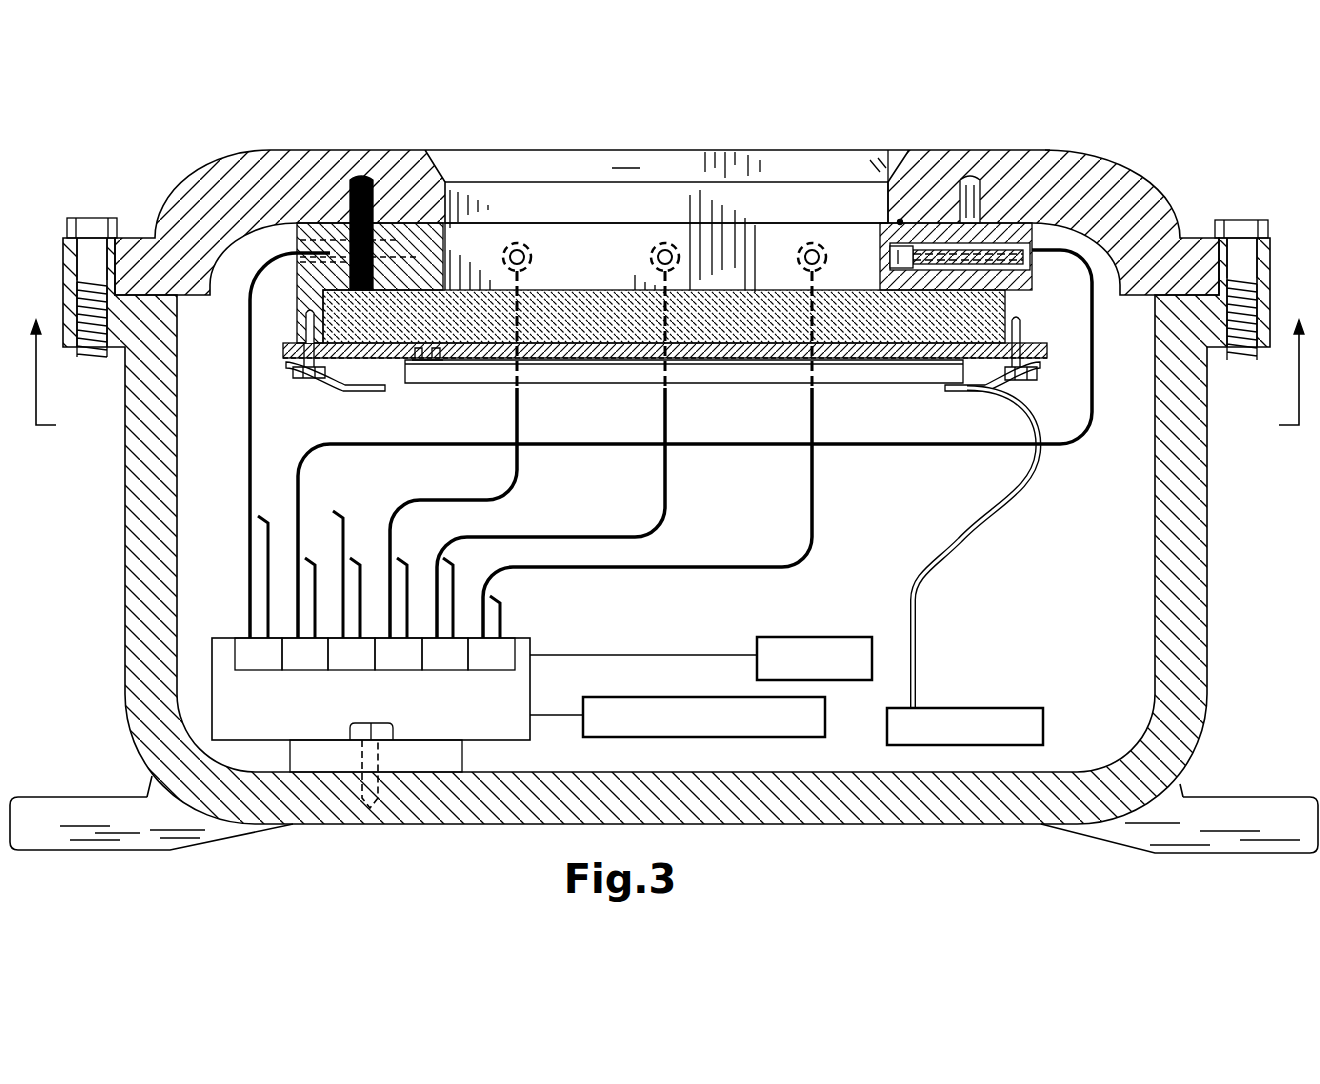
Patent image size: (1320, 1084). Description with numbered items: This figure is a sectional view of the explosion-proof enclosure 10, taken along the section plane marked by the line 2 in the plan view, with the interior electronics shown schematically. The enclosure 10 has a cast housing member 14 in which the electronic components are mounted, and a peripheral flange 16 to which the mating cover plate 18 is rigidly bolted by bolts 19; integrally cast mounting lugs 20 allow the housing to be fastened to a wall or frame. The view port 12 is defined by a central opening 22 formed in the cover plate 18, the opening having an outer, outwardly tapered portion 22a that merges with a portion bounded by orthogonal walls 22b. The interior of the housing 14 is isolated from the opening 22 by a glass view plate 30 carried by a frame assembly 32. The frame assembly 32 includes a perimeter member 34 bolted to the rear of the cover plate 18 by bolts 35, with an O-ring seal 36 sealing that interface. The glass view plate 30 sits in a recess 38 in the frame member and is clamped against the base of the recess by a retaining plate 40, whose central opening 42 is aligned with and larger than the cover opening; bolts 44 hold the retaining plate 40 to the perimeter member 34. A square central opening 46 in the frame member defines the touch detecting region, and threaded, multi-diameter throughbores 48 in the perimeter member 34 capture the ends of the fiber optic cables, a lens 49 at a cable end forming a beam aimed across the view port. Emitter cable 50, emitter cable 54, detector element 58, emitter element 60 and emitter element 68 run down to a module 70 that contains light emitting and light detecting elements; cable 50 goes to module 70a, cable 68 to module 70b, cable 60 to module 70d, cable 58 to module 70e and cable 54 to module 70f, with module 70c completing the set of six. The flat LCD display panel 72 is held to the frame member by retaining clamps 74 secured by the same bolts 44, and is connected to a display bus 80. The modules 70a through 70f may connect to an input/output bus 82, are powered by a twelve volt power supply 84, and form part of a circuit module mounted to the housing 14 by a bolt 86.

The section line 2- 2 is at (668, 359).
The explosion-proof enclosure 10 is at (1062, 132).
The view port 12 is at (660, 135).
The housing member 14 is at (1190, 592).
The peripheral flange 16 is at (1265, 347).
The cover plate 18 is at (1130, 203).
The bolts 19 is at (98, 215).
The mounting lugs 20 is at (1232, 815).
The central opening 22 is at (450, 186).
The outwardly tapered portion 22a is at (885, 176).
The orthogonal walls 22b is at (866, 210).
The glass view plate 30 is at (740, 327).
The frame assembly 32 is at (280, 300).
The perimeter member 34 is at (1048, 240).
The bolts 35 is at (348, 195).
The O-ring seal 36 is at (901, 221).
The recess 38 is at (328, 327).
The retaining plate 40 is at (942, 352).
The central opening 42 is at (430, 356).
The bolts 44 is at (312, 378).
The central opening 46 is at (450, 237).
The throughbores 48 is at (1032, 270).
The lens 49 is at (889, 257).
The fiber optic cable 50 is at (248, 400).
The fiber optic cable 54 is at (813, 478).
The fiber optic element 58 is at (668, 482).
The fiber optic element 60 is at (519, 420).
The fiber optic element 68 is at (866, 448).
The module 70 is at (484, 641).
The module 70a is at (258, 593).
The module 70b is at (305, 614).
The module 70c is at (351, 590).
The module 70d is at (398, 614).
The module 70e is at (445, 614).
The module 70f is at (491, 633).
The display panel 72 is at (604, 375).
The retaining clamps 74 is at (353, 388).
The display bus 80 is at (985, 710).
The input/output bus 82 is at (811, 642).
The 12 volt power supply 84 is at (725, 698).
The bolt 86 is at (385, 724).